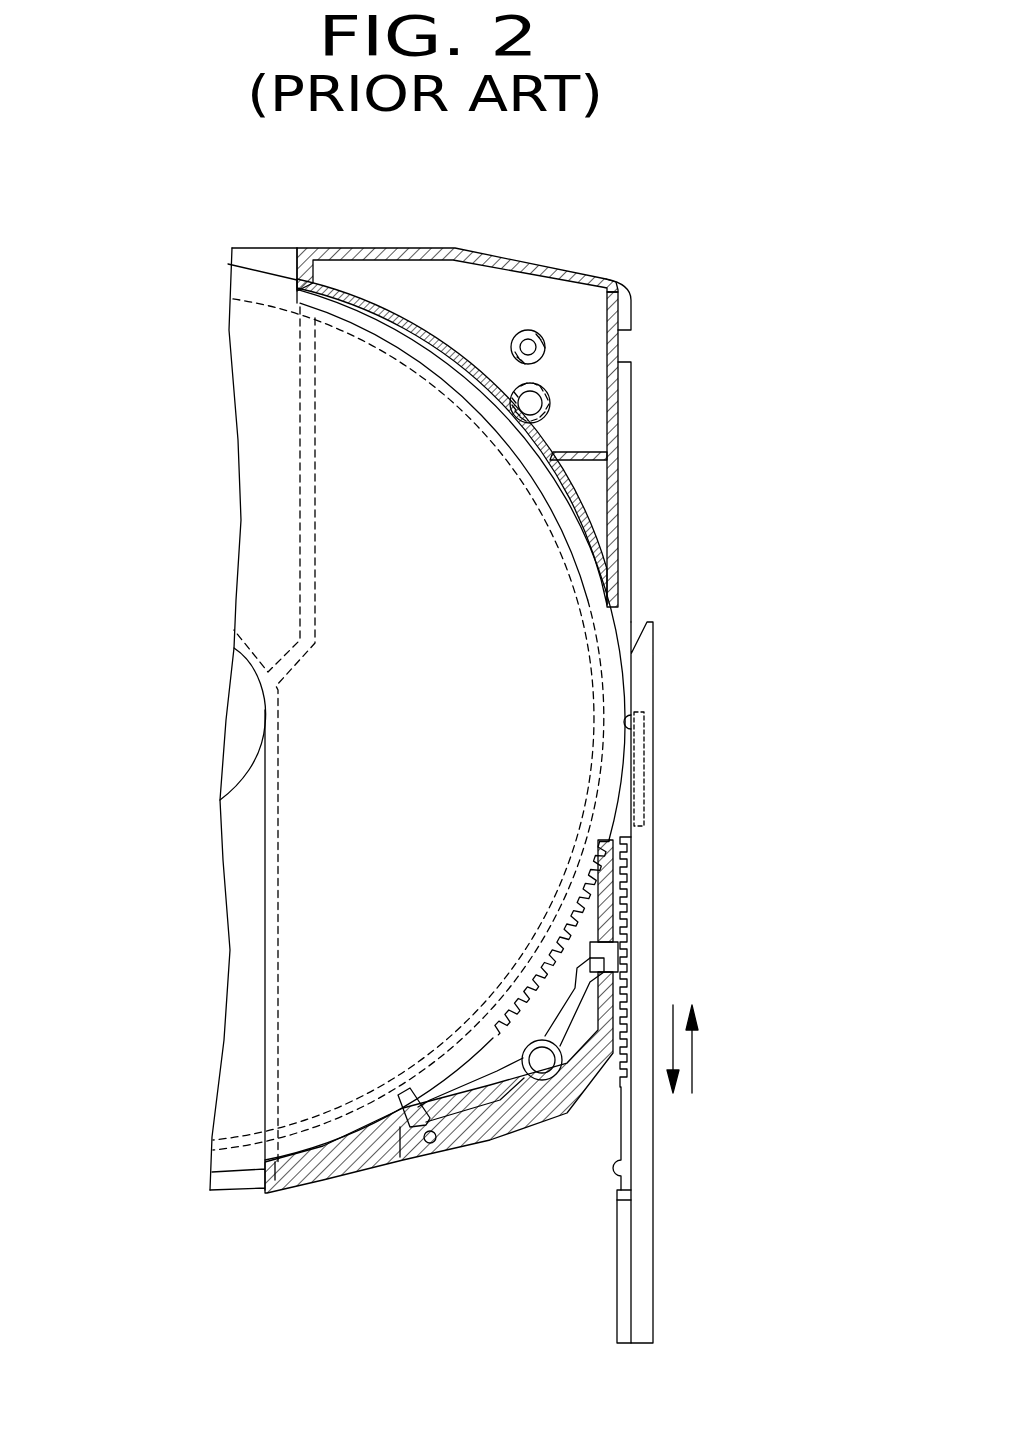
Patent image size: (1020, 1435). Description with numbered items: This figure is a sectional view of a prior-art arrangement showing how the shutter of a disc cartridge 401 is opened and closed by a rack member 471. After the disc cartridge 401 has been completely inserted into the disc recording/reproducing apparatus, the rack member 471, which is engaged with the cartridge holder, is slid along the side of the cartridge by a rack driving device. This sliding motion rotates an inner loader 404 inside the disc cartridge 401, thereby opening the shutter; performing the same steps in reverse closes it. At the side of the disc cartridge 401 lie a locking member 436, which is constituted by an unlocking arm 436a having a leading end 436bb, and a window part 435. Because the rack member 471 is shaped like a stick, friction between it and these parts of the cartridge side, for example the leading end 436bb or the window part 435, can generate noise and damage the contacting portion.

The disc cartridge 401 is at (333, 1200).
The inner loader 404 is at (230, 1058).
The window part 435 is at (628, 837).
The locking member 436 is at (545, 1022).
The unlocking arm 436a is at (573, 995).
The leading end of unlocking arm 436bb is at (575, 938).
The rack member 471 is at (650, 938).